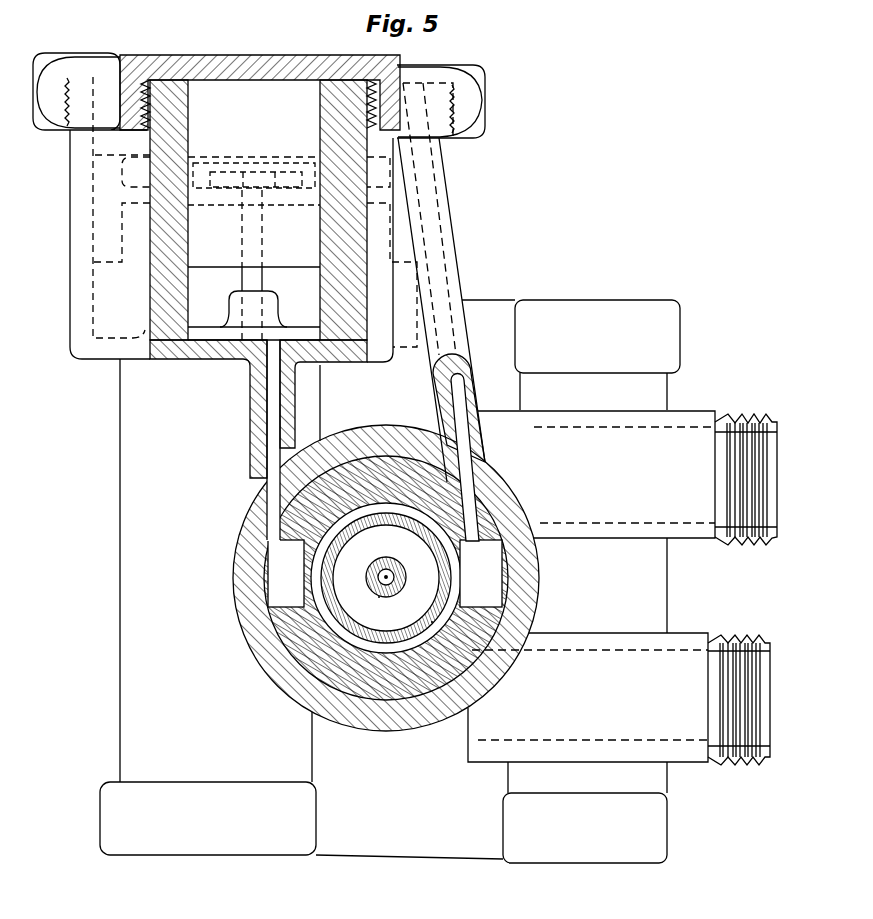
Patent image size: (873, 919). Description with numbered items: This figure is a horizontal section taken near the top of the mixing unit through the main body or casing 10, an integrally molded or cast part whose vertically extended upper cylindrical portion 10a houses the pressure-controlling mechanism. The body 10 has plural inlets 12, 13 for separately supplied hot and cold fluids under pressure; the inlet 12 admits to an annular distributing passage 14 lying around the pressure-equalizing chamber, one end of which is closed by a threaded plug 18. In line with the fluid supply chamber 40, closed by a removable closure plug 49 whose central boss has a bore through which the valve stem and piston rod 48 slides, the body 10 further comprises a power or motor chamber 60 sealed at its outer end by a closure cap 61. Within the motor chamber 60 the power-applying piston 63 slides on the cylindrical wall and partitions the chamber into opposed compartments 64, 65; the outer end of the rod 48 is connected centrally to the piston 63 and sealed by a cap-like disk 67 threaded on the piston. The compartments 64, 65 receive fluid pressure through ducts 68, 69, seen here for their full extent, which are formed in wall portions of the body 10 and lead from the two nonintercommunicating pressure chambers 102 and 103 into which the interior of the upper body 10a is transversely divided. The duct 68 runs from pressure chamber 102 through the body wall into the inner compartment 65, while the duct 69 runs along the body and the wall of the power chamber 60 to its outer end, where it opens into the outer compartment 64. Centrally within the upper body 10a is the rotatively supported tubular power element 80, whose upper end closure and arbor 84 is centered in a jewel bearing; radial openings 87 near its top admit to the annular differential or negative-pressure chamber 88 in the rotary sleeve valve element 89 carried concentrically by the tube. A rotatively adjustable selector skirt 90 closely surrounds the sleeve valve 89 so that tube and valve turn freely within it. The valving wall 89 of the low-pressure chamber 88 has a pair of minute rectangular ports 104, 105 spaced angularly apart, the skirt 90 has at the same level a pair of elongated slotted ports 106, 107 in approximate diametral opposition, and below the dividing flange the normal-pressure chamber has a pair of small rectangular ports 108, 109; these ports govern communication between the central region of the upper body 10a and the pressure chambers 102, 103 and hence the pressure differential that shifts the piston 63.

The main body or casing 10 is at (494, 287).
The upper cylindrical body portion 10a is at (238, 598).
The inlet 12 is at (772, 487).
The inlet 13 is at (772, 697).
The annular distributing passage 14 is at (674, 427).
The threaded plug 18 is at (590, 300).
The fluid supply chamber 40 is at (118, 634).
The valve stem and piston rod 48 is at (262, 231).
The closure plug 49 is at (286, 329).
The power or motor chamber 60 is at (70, 294).
The closure cap 61 is at (486, 94).
The power-applying piston 63 is at (258, 210).
The outer piston compartment 64 is at (254, 124).
The cap-like disk 67 is at (233, 163).
The inner piston compartment 65 is at (254, 278).
The duct 68 is at (268, 413).
The duct 69 is at (433, 59).
The tubular power element 80 is at (390, 600).
The upper end closure and arbor 84 is at (367, 582).
The radial openings 87 is at (388, 558).
The differential or negative-pressure chamber 88 is at (386, 578).
The rotary sleeve valve element 89 is at (464, 572).
The selector skirt 90 is at (304, 560).
The pressure chamber 102 is at (238, 562).
The pressure chamber 103 is at (540, 578).
The valve port 104 is at (380, 596).
The valve port 105 is at (430, 622).
The slotted port 106 is at (305, 583).
The slotted port 107 is at (464, 592).
The rectangular port 108 is at (386, 578).
The rectangular port 109 is at (415, 554).